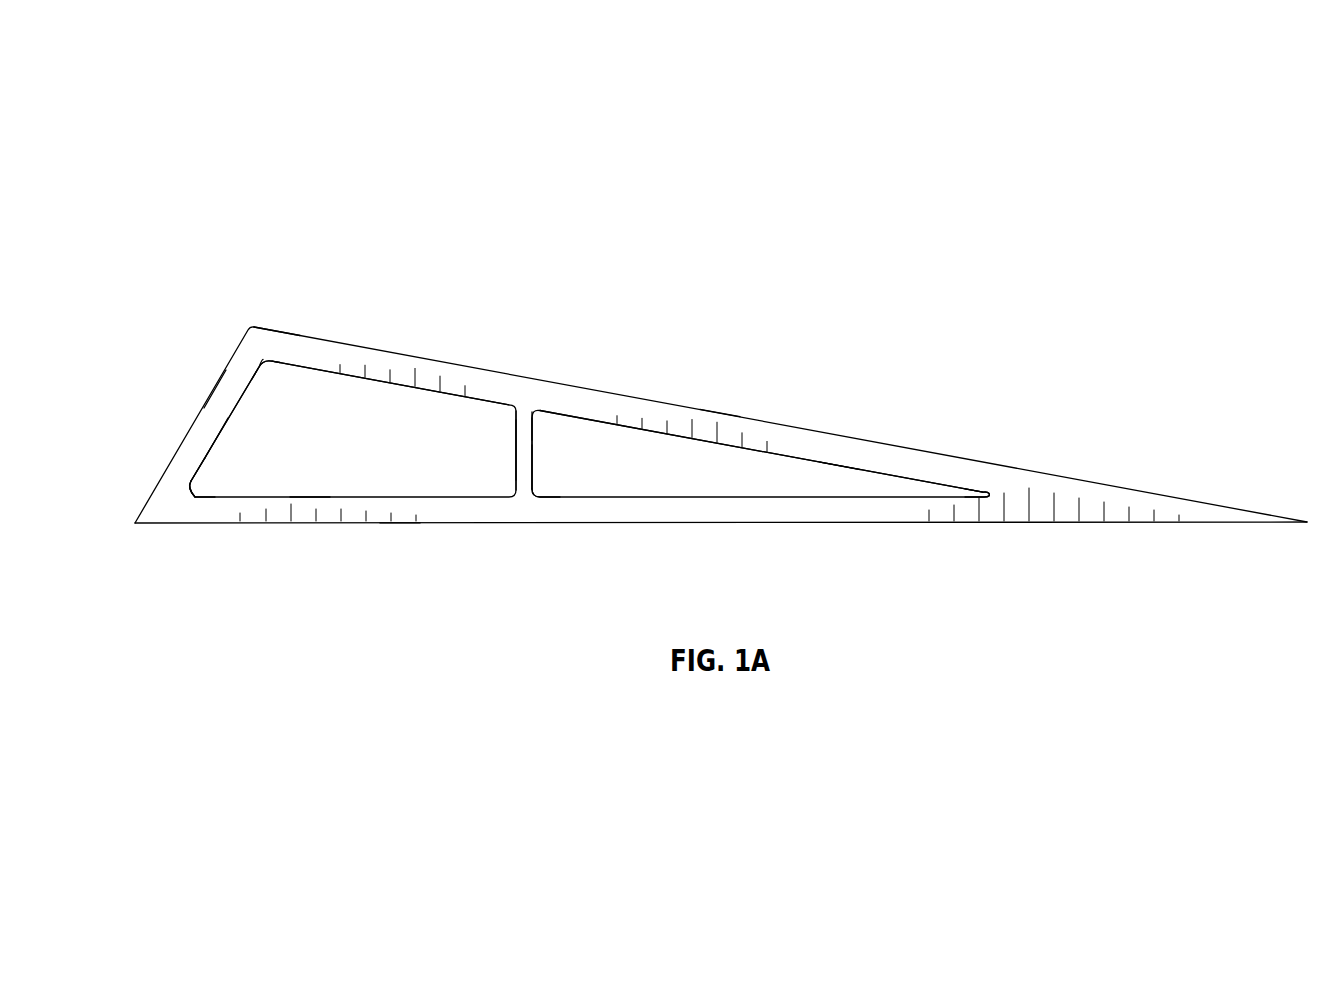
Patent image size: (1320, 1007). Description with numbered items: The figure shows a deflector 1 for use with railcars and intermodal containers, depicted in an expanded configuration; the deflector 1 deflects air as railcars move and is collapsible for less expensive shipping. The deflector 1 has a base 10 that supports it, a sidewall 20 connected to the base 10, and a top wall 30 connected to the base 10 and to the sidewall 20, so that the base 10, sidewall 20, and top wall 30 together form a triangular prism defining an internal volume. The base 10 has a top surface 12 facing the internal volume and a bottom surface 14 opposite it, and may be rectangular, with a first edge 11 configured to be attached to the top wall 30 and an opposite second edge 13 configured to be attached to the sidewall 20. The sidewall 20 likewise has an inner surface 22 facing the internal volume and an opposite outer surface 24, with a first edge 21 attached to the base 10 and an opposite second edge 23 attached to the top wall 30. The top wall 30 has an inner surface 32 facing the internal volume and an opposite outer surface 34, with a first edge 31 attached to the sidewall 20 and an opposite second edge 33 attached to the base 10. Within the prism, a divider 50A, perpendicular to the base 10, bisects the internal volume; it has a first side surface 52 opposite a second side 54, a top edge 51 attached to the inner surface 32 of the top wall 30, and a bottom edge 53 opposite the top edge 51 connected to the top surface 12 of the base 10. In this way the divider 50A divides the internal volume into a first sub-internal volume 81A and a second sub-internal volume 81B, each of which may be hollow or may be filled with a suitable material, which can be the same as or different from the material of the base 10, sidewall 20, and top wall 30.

The deflector 1 is at (405, 255).
The base 10 is at (692, 524).
The first edge 11 is at (988, 500).
The top surface 12 is at (308, 498).
The second edge 13 is at (193, 499).
The bottom surface 14 is at (400, 527).
The sidewall 20 is at (168, 449).
The first edge 21 is at (187, 487).
The inner surface 22 is at (216, 438).
The second edge 23 is at (259, 366).
The outer surface 24 is at (214, 387).
The top wall 30 is at (659, 385).
The first edge 31 is at (265, 329).
The inner surface 32 is at (840, 464).
The second edge 33 is at (983, 491).
The outer surface 34 is at (718, 412).
The divider 50A is at (519, 432).
The top edge 51 is at (532, 422).
The first side surface 52 is at (515, 448).
The bottom edge 53 is at (543, 498).
The second side 54 is at (532, 458).
The first sub-internal volume 81A is at (278, 463).
The second sub-internal volume 81B is at (792, 480).